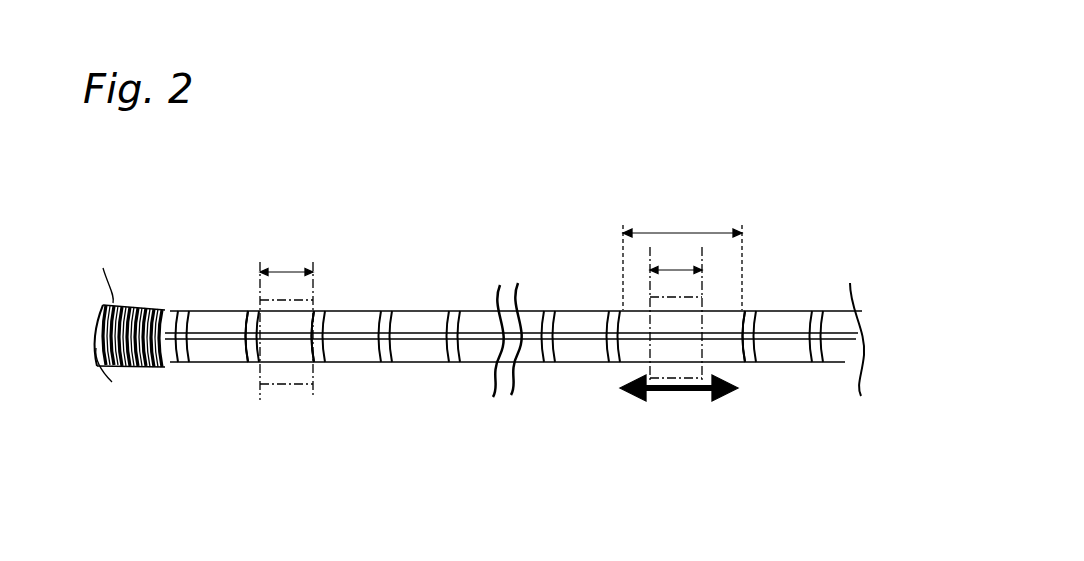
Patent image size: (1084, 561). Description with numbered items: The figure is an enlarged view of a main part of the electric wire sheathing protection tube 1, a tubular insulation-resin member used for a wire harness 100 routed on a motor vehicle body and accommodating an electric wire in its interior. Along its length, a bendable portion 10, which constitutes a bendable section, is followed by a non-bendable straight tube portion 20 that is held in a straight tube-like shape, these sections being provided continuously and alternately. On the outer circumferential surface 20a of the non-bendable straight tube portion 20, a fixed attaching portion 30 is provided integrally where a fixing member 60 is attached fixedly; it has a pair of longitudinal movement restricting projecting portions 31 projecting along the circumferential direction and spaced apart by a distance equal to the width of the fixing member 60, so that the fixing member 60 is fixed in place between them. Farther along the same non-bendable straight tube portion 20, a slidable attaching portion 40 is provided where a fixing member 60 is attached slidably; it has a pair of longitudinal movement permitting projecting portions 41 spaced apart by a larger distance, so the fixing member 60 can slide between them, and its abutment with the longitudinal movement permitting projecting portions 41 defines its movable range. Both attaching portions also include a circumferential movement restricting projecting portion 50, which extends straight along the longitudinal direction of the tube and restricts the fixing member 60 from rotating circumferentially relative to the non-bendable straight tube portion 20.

The electric wire sheathing protection tube 1 is at (480, 330).
The wire harness 100 is at (480, 335).
The bendable portion 10 is at (128, 296).
The non-bendable straight tube portion 20 is at (514, 383).
The outer circumferential surface 20a is at (410, 364).
The fixed attaching portion 30 is at (250, 366).
The longitudinal movement restricting projecting portion 31 is at (250, 305).
The slidable attaching portion 40 is at (627, 368).
The longitudinal movement permitting projecting portion 41 is at (614, 308).
The circumferential movement restricting projecting portion 50 is at (291, 363).
The fixing member 60 is at (262, 385).